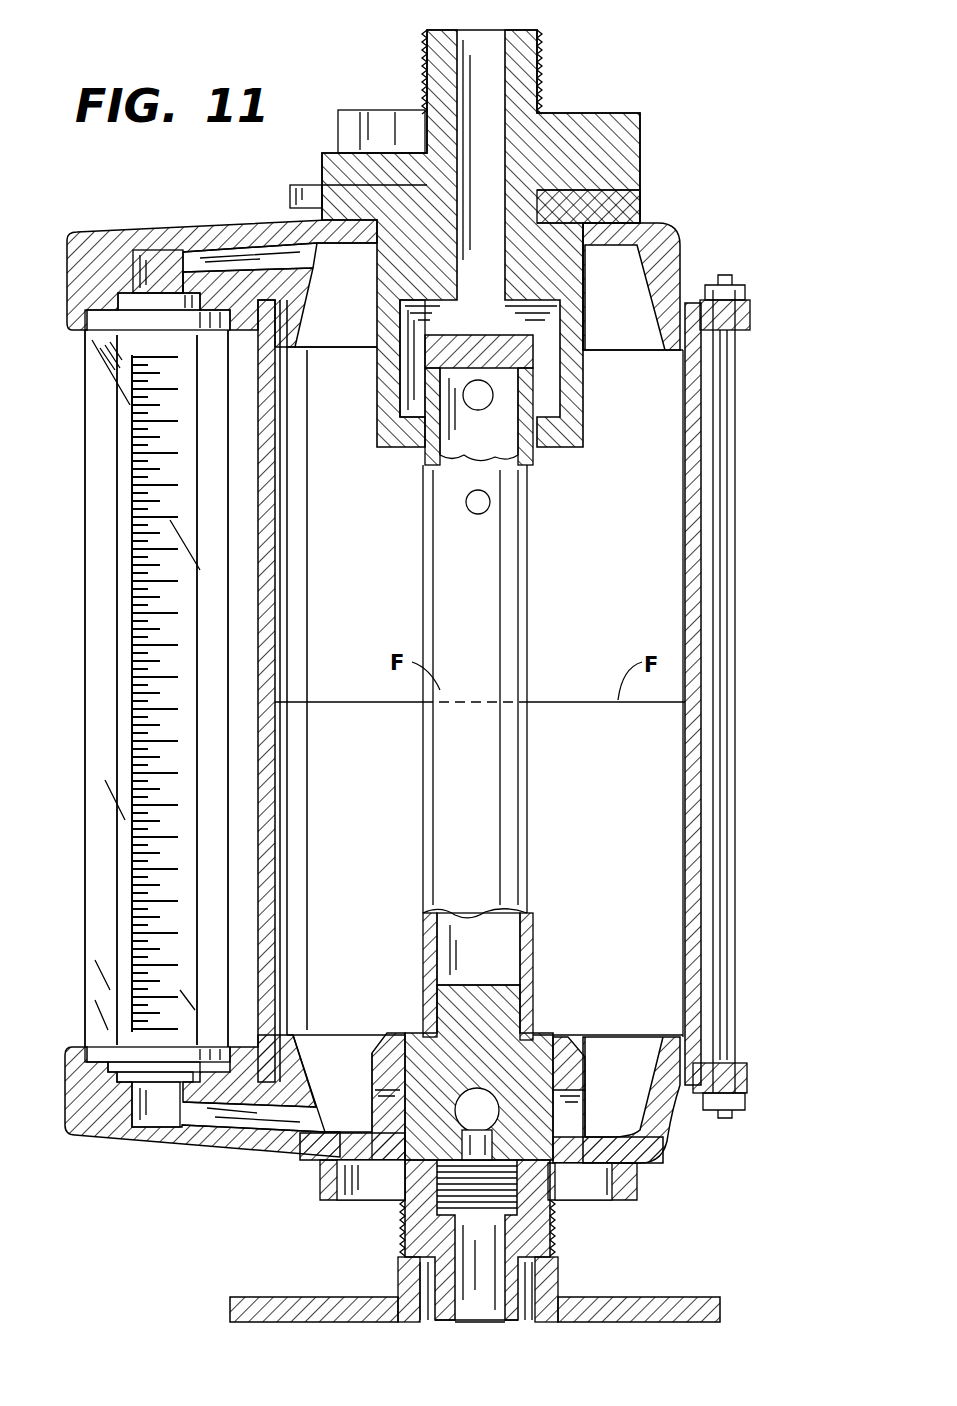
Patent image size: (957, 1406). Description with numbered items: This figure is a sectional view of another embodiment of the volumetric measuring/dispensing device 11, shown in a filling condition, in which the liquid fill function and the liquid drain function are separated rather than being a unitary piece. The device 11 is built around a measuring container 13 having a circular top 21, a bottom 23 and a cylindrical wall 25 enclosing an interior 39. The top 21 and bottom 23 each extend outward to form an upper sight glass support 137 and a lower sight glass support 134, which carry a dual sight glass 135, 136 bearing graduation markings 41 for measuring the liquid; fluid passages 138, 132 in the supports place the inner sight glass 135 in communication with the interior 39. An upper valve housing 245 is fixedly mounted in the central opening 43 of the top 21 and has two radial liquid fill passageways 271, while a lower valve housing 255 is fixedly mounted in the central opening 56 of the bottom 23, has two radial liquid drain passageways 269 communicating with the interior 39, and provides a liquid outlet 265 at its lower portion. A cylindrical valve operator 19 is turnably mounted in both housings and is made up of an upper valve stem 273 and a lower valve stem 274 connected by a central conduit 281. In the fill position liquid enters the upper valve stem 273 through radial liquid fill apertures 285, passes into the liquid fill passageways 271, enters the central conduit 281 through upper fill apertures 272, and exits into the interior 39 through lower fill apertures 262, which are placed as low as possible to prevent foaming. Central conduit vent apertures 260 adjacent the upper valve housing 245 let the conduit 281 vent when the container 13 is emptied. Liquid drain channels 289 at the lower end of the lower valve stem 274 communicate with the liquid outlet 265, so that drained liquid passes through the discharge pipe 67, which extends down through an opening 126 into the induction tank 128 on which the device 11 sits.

The volumetric measuring/dispensing device 11 is at (750, 68).
The measuring container 13 is at (702, 595).
The valve operator 19 is at (575, 665).
The top 21 is at (276, 220).
The bottom 23 is at (665, 1125).
The cylindrical wall 25 is at (697, 665).
The interior 39 is at (612, 568).
The graduation markings 41 is at (135, 630).
The central opening 43 is at (377, 268).
The central opening 56 is at (578, 1137).
The discharge pipe 67 is at (525, 1305).
The opening 126 is at (412, 1316).
The induction tank 128 is at (712, 1300).
The fluid passage 132 is at (225, 1118).
The lower sight glass support 134 is at (93, 1122).
The inner sight glass 135 is at (118, 437).
The outer sight glass 136 is at (85, 905).
The upper sight glass support 137 is at (100, 245).
The fluid passage 138 is at (214, 262).
The upper valve housing 245 is at (643, 203).
The lower valve housing 255 is at (570, 1038).
The central conduit vent apertures 260 is at (490, 503).
The lower fill apertures 262 is at (428, 960).
The liquid outlet 265 is at (515, 1205).
The liquid drain passageways 269 is at (372, 1098).
The liquid fill passageways 271 is at (404, 358).
The upper fill apertures 272 is at (575, 405).
The upper valve stem 273 is at (632, 148).
The lower valve stem 274 is at (520, 1010).
The central conduit 281 is at (440, 598).
The liquid fill apertures 285 is at (560, 308).
The liquid drain channels 289 is at (488, 1098).